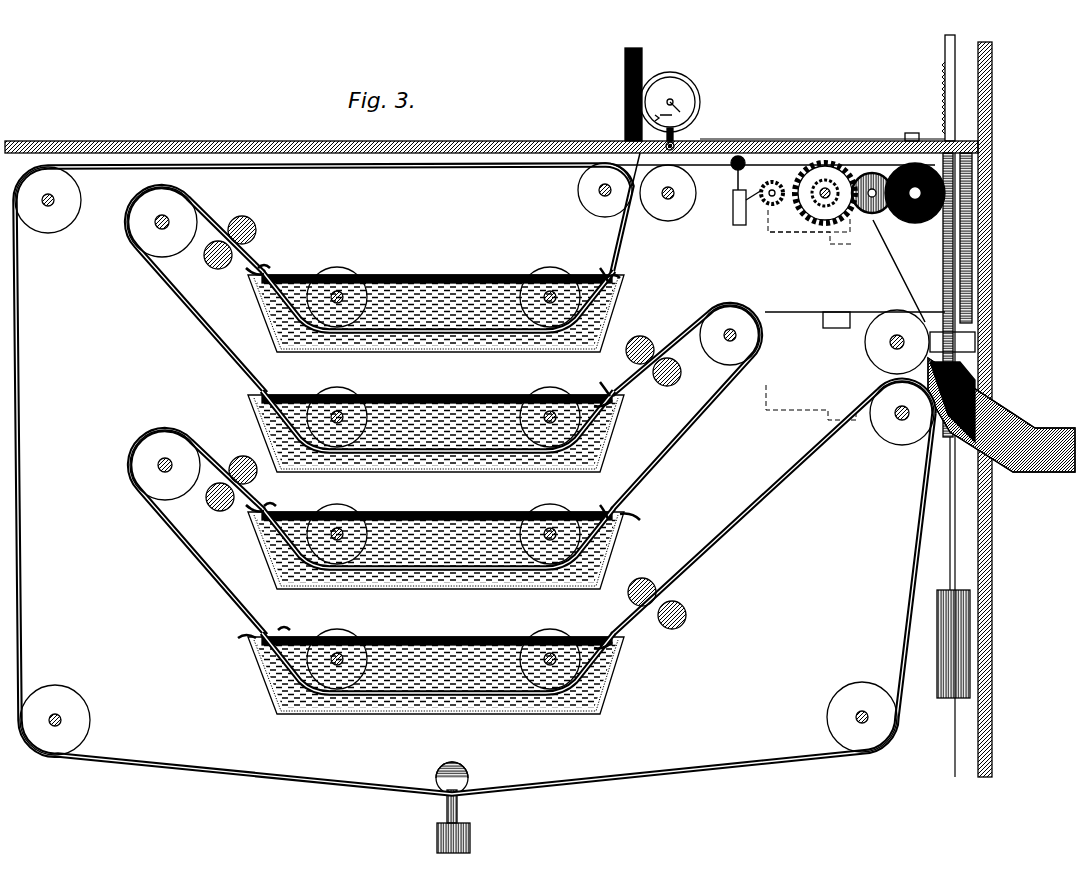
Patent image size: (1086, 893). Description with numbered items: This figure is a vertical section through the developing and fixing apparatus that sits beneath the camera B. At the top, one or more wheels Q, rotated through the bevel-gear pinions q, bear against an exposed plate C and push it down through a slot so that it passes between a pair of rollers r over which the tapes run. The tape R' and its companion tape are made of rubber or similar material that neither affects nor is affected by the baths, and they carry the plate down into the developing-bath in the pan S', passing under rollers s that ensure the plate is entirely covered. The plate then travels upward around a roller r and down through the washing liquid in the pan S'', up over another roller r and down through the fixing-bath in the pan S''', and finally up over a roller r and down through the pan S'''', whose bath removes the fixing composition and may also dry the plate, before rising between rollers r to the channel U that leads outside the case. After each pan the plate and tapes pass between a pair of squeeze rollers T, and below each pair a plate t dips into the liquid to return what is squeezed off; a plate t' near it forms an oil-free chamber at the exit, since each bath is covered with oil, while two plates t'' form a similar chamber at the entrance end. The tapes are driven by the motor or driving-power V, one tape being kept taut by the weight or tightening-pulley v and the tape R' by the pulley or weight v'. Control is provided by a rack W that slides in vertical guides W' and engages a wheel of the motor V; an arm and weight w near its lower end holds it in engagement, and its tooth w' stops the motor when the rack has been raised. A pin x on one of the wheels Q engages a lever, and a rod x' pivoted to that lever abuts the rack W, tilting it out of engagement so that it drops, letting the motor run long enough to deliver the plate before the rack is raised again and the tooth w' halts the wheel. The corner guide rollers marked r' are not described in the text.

The camera B is at (491, 135).
The plate C is at (625, 88).
The wheel Q is at (680, 106).
The pin x is at (699, 133).
The rod x' is at (822, 121).
The rack W is at (979, 406).
The vertical guides W' is at (1000, 238).
The tape R' is at (474, 479).
The corner guide roller r' is at (456, 461).
The rollers r is at (530, 331).
The rollers T is at (256, 228).
The plate t is at (432, 460).
The plate t' is at (436, 375).
The plates t'' is at (445, 452).
The rollers s is at (342, 272).
The pan S' is at (452, 309).
The pan S'' is at (454, 429).
The pan S''' is at (458, 546).
The pan S'''' is at (461, 671).
The bevel-gear pinions q is at (626, 174).
The rod h is at (705, 187).
The weight or tightening-pulley v is at (743, 219).
The tooth w' is at (805, 301).
The motor or driving-power V is at (822, 215).
The pulley or weight v' is at (689, 561).
The arm and weight w is at (870, 334).
The channel U is at (1000, 405).